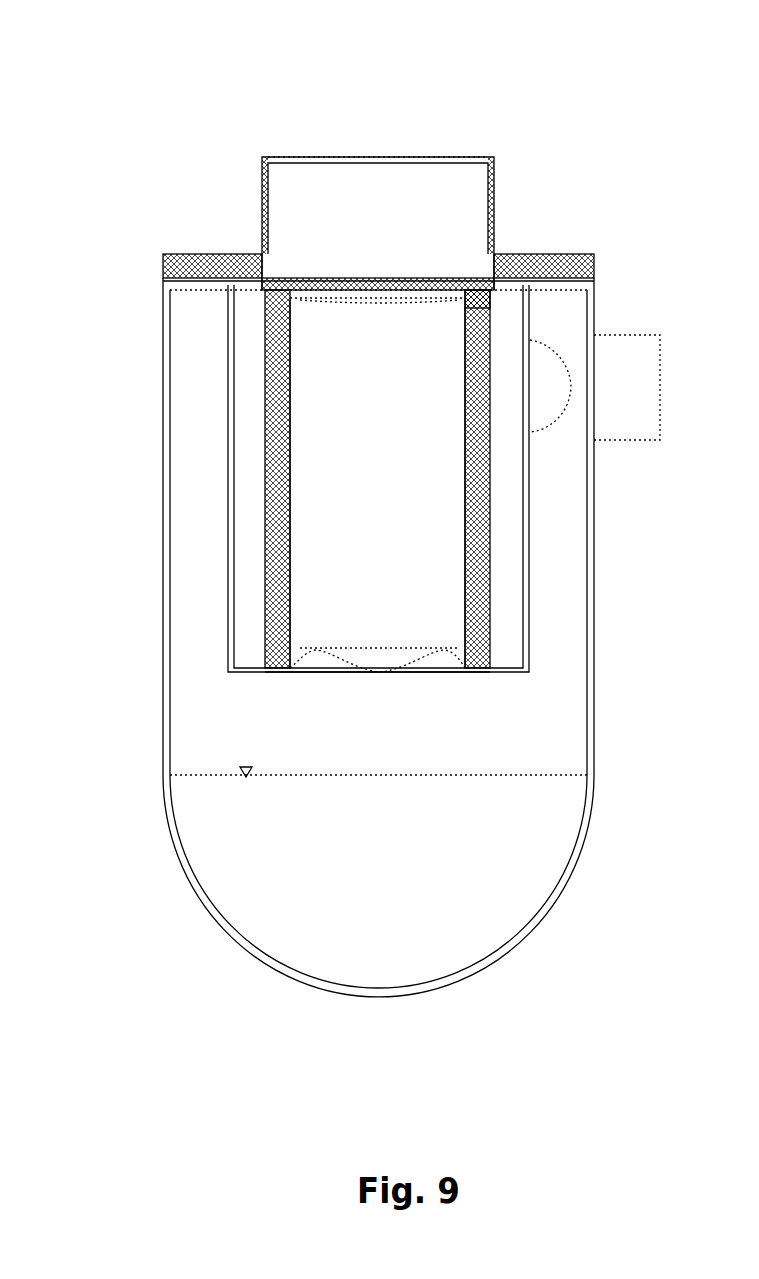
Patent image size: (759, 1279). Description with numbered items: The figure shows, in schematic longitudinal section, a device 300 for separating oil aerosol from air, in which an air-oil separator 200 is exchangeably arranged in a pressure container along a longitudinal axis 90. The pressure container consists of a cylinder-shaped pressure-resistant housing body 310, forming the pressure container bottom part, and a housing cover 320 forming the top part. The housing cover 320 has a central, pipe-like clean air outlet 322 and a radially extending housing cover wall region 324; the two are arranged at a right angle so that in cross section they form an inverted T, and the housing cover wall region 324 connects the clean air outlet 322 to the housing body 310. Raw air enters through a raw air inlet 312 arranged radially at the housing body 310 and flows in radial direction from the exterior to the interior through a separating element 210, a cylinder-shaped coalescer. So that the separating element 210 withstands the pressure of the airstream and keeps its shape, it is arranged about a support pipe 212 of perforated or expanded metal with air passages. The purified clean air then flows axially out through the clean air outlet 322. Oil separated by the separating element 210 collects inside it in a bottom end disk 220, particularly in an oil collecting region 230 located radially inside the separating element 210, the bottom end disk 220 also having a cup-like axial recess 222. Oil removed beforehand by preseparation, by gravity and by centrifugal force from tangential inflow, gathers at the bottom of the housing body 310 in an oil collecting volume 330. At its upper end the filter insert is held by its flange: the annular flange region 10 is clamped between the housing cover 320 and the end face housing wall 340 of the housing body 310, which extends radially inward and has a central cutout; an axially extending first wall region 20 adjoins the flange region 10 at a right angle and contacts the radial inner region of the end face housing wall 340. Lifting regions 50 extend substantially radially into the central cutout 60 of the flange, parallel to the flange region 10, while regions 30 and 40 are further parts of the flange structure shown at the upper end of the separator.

The device for separating oil aerosol from air 300 is at (96, 76).
The longitudinal axis 90 is at (378, 157).
The housing cover 320 is at (262, 157).
The clean air outlet 322 is at (378, 205).
The housing cover wall region 324 is at (552, 262).
The flange region 10 is at (262, 278).
The first wall region 20 is at (492, 280).
The top plate 30 is at (288, 292).
The seal 40 is at (465, 297).
The lifting regions 50 is at (302, 300).
The central cutout 60 is at (352, 301).
The air-oil separator 200 is at (254, 394).
The separating element 210 is at (280, 542).
The support pipe 212 is at (288, 630).
The bottom end disk 220 is at (305, 666).
The axial recess 222 is at (482, 674).
The oil collecting region 230 is at (390, 662).
The housing body 310 is at (163, 565).
The raw air inlet 312 is at (595, 387).
The oil collecting volume 330 is at (378, 817).
The end face housing wall 340 is at (200, 291).